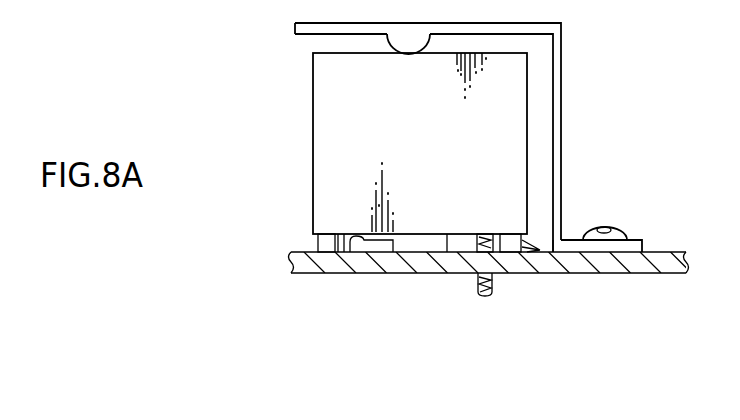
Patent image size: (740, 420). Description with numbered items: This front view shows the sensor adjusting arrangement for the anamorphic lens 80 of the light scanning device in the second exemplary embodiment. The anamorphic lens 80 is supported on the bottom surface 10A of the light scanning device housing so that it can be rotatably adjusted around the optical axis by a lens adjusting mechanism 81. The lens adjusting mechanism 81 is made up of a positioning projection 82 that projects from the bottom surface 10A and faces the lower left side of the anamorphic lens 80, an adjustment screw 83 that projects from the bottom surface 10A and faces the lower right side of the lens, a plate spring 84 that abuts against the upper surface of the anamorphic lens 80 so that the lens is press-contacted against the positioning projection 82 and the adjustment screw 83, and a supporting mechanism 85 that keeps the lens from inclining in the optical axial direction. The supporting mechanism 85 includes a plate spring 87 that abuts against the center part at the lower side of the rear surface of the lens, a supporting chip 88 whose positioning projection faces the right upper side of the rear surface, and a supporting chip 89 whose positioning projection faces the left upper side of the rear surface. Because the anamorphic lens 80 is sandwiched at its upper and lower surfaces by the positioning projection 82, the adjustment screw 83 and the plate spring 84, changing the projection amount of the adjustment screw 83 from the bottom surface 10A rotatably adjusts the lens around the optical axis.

The bottom surface 10A is at (323, 273).
The anamorphic lens 80 is at (313, 123).
The lens adjusting mechanism 81 is at (628, 364).
The positioning projection 82 is at (362, 238).
The adjustment screw 83 is at (486, 296).
The plate spring 84 is at (563, 197).
The supporting mechanism 85 is at (553, 252).
The plate spring 87 is at (449, 240).
The supporting chip 88 is at (510, 234).
The supporting chip 89 is at (318, 240).